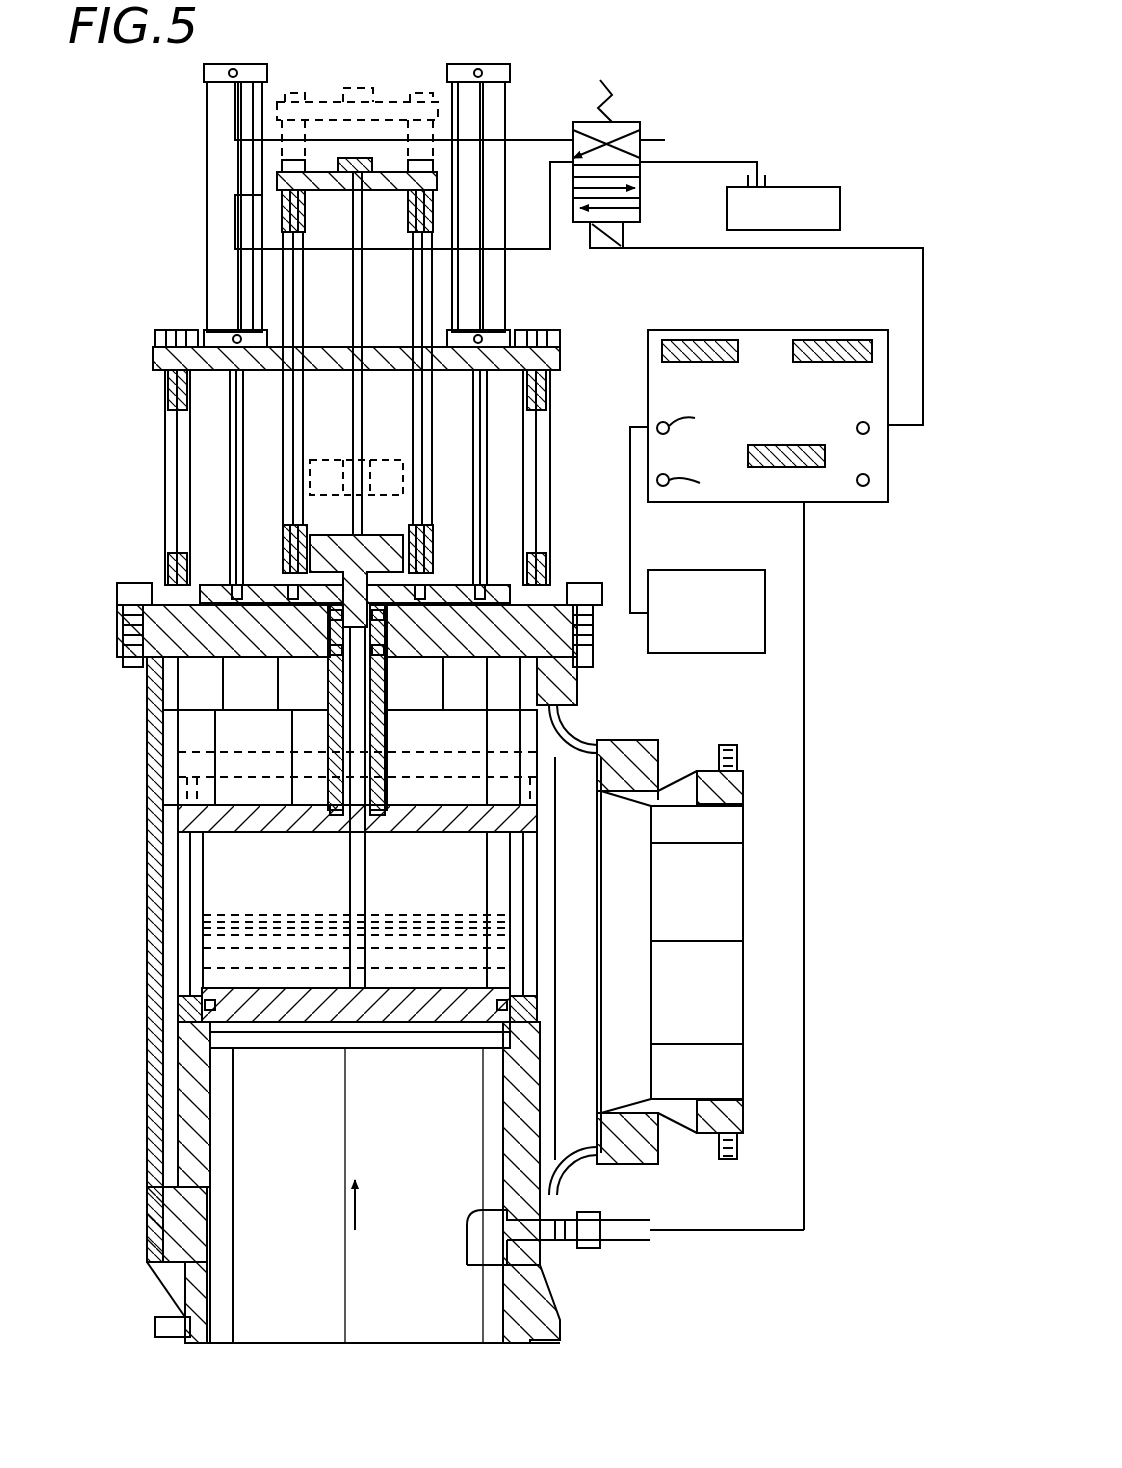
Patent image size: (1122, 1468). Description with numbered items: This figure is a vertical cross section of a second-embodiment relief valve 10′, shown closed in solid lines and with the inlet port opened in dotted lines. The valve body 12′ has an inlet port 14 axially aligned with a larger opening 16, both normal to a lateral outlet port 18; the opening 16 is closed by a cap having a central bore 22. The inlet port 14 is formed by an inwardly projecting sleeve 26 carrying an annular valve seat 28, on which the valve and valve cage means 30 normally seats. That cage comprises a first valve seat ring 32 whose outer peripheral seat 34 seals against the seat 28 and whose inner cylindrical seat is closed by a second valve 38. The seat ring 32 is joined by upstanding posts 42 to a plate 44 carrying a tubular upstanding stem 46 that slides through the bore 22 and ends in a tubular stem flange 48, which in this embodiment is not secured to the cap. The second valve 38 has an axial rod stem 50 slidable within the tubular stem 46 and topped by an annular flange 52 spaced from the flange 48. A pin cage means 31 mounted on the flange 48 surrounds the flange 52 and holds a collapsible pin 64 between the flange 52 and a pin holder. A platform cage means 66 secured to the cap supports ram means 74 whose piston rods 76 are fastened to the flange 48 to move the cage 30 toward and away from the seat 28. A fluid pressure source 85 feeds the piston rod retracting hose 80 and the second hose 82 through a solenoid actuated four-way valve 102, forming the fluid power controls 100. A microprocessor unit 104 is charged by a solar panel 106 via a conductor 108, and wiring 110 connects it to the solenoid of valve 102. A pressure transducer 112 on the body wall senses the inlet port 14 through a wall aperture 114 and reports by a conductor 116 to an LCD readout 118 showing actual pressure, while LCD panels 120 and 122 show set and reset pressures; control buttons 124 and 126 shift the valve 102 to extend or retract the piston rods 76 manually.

The relief valve 10′ is at (182, 263).
The valve body 12′ is at (588, 728).
The inlet port 14 is at (500, 1283).
The opening 16 is at (580, 686).
The outlet port 18 is at (717, 810).
The central bore 22 is at (388, 676).
The sleeve 26 is at (535, 1085).
The valve seat 28 is at (480, 1040).
The valve and valve cage means 30 is at (560, 790).
The pin cage means 31 is at (390, 100).
The first valve seat ring 32 is at (560, 940).
The outer peripheral seat 34 is at (177, 1032).
The second valve 38 is at (410, 975).
The upstanding posts 42 is at (540, 895).
The plate 44 is at (260, 783).
The tubular upstanding stem 46 is at (330, 740).
The tubular stem flange 48 is at (493, 583).
The axial rod stem 50 is at (358, 730).
The annular flange 52 is at (378, 535).
The collapsible pin 64 is at (352, 310).
The platform cage means 66 is at (562, 358).
The ram means 74 is at (208, 163).
The piston rod 76 is at (237, 522).
The piston rod retracting hose 80 is at (552, 250).
The second hose 82 is at (558, 140).
The fluid pressure source 85 is at (800, 224).
The fluid power controls 100 is at (785, 135).
The four-way valve 102 is at (620, 120).
The microprocessor unit 104 is at (808, 505).
The solar panel 106 is at (678, 568).
The conductor 108 is at (633, 522).
The wiring 110 is at (690, 248).
The pressure transducer 112 is at (605, 1216).
The wall aperture 114 is at (467, 1235).
The conductor 116 is at (806, 900).
The LCD readout 118 is at (765, 443).
The LCD panel 120 is at (695, 340).
The LCD panel 122 is at (820, 340).
The control button 124 is at (868, 423).
The control button 126 is at (866, 486).